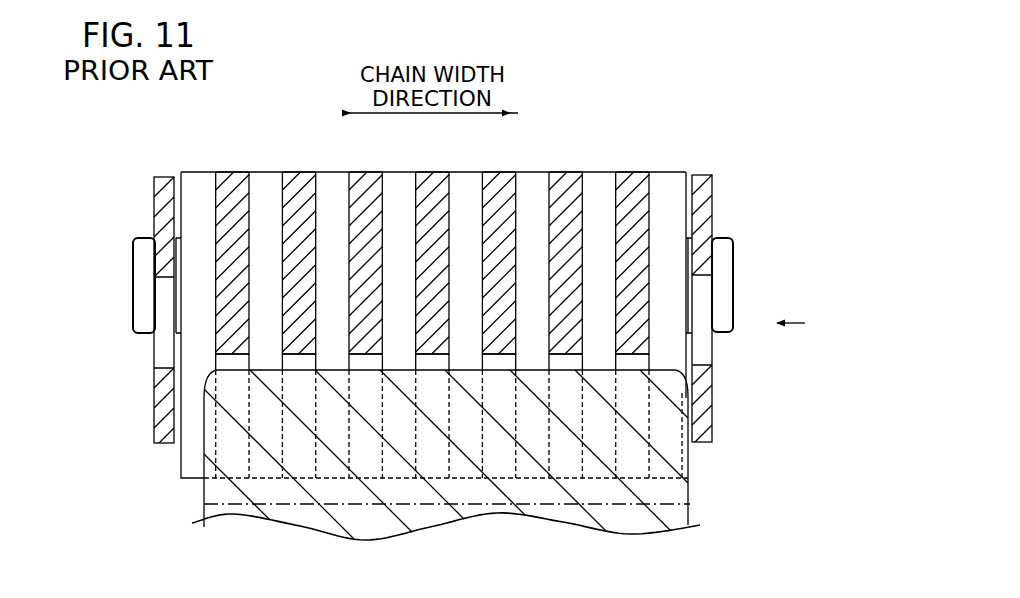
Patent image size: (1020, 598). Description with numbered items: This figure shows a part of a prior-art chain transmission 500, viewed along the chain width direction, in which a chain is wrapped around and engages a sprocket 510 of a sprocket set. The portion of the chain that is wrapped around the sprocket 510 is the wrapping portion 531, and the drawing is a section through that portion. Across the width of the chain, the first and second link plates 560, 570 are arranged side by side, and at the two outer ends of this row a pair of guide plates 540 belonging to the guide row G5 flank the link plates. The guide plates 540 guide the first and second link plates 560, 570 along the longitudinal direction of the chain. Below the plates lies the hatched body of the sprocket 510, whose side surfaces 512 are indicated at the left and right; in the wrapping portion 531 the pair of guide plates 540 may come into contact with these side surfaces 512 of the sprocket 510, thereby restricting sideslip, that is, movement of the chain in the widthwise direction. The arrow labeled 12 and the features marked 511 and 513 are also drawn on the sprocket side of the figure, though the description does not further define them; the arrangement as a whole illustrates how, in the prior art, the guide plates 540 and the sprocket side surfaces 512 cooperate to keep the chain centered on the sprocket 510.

The chain transmission 500 is at (455, 267).
The wrapping portion 531 is at (552, 143).
The first link plates 560 is at (305, 198).
The second link plates 570 is at (263, 186).
The guide plates 540 is at (160, 390).
The guide row G5 is at (143, 223).
The chain travel direction 12 is at (803, 324).
The sprocket 510 is at (378, 522).
The tooth portion 511 is at (625, 362).
The side surfaces 512 is at (200, 508).
The flange portion 513 is at (204, 448).